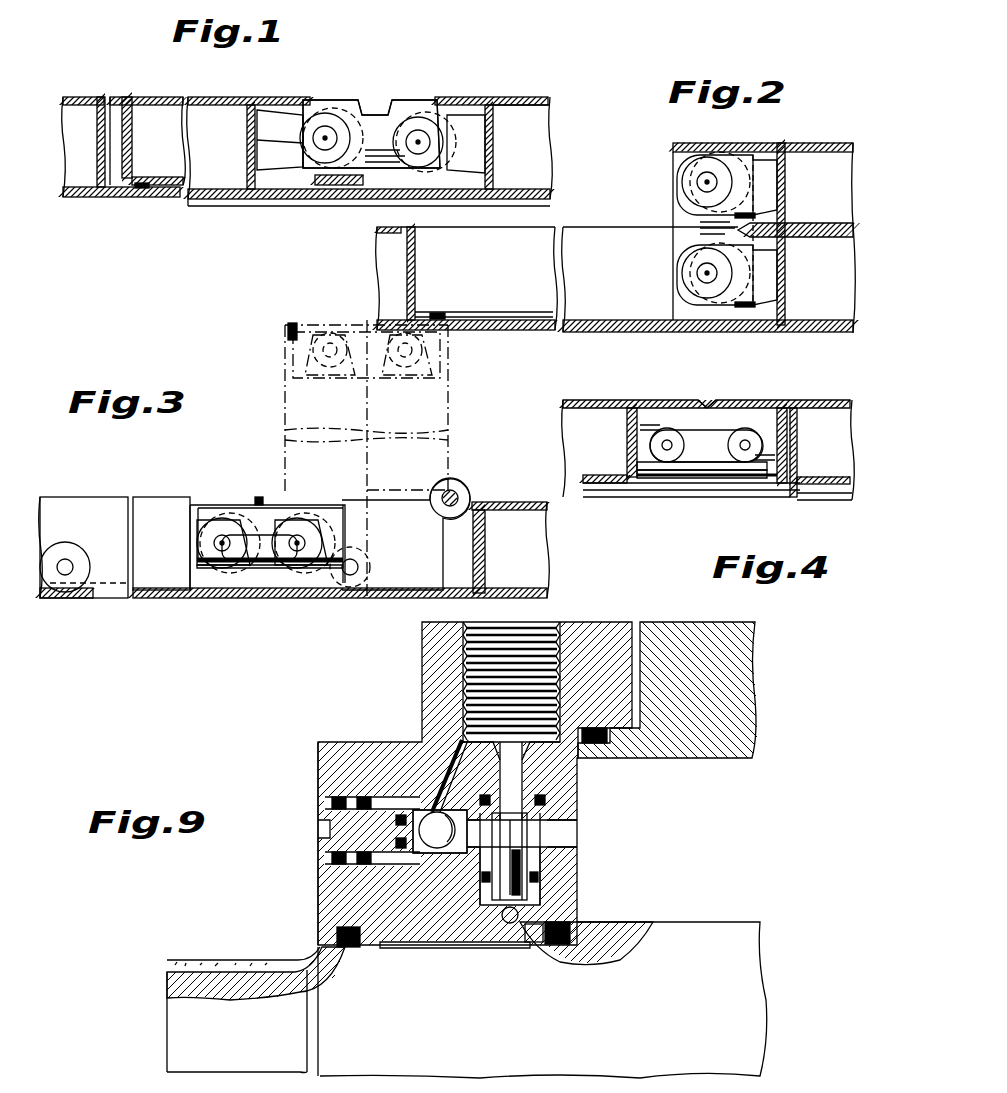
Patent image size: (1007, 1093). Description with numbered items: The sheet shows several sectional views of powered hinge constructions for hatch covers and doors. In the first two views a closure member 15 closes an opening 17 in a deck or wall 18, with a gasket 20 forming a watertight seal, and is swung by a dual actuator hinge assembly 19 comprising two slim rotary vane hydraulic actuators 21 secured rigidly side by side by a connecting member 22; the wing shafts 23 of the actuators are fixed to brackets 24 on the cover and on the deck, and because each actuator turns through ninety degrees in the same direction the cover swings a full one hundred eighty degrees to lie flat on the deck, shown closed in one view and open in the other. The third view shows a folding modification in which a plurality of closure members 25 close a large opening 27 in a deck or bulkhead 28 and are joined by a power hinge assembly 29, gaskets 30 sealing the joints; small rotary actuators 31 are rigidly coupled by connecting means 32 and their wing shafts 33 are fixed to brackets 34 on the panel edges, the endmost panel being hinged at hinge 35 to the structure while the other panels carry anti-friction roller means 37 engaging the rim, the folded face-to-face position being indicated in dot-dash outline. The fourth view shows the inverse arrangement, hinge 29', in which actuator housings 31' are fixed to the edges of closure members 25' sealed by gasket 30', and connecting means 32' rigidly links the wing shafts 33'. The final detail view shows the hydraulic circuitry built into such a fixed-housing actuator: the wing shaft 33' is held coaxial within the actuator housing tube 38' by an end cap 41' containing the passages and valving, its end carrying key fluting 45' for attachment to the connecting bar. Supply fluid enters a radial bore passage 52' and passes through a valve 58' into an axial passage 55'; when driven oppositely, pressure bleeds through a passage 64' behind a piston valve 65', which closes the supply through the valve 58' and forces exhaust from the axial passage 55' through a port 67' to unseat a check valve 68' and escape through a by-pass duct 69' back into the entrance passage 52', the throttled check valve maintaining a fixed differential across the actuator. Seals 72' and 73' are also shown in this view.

In FIG. 1, the closure member 15 is at (225, 97).
In FIG. 2, the closure member 15 is at (842, 143).
In FIG. 1, the opening 17 is at (330, 205).
In FIG. 2, the opening 17 is at (515, 325).
In FIG. 1, the deck or wall 18 is at (528, 97).
In FIG. 2, the deck or wall 18 is at (812, 240).
In FIG. 1, the dual actuator hinge assembly 19 is at (408, 87).
In FIG. 1, the gasket 20 is at (148, 190).
In FIG. 2, the gasket 20 is at (442, 312).
In FIG. 1, the rotary vane hydraulic actuator 21 is at (385, 112).
In FIG. 2, the rotary vane hydraulic actuator 21 is at (682, 215).
In FIG. 1, the connecting member 22 is at (380, 170).
In FIG. 2, the connecting member 22 is at (690, 243).
In FIG. 1, the wing shaft 23 is at (323, 138).
In FIG. 2, the wing shaft 23 is at (705, 182).
In FIG. 1, the bracket 24 is at (270, 148).
In FIG. 2, the bracket 24 is at (765, 192).
In FIG. 3, the closure member 25 is at (293, 515).
In FIG. 3, the opening 27 is at (115, 598).
In FIG. 3, the deck or bulkhead 28 is at (512, 503).
In FIG. 3, the power hinge assembly 29 is at (269, 603).
In FIG. 3, the gasket 30 is at (273, 397).
In FIG. 3, the rotary actuator 31 is at (318, 486).
In FIG. 3, the connecting means 32 is at (276, 588).
In FIG. 3, the wing shaft 33 is at (309, 453).
In FIG. 3, the bracket 34 is at (288, 350).
In FIG. 3, the hinge 35 is at (452, 498).
In FIG. 3, the anti-friction roller means 37 is at (70, 560).
In FIG. 4, the closure member 25' is at (706, 452).
In FIG. 4, the hinge 29' is at (702, 506).
In FIG. 4, the gasket 30' is at (718, 374).
In FIG. 4, the actuator housing 31' is at (693, 481).
In FIG. 9, the actuator housing 31' is at (280, 840).
In FIG. 4, the connecting means 32' is at (706, 414).
In FIG. 4, the wing shaft 33' is at (695, 415).
In FIG. 9, the wing shaft 33' is at (537, 986).
In FIG. 9, the actuator housing tube 38' is at (667, 677).
In FIG. 9, the end cap 41' is at (447, 785).
In FIG. 9, the key fluting 45' is at (256, 996).
In FIG. 9, the radial bore passage 52' is at (529, 677).
In FIG. 9, the axial passage 55' is at (590, 828).
In FIG. 9, the valve 58' is at (601, 766).
In FIG. 9, the passage 64' is at (500, 950).
In FIG. 9, the piston valve 65' is at (552, 847).
In FIG. 9, the port 67' is at (476, 897).
In FIG. 9, the check valve 68' is at (416, 898).
In FIG. 9, the by-pass duct 69' is at (420, 762).
In FIG. 9, the seal 72' is at (586, 929).
In FIG. 9, the seal 73' is at (348, 963).